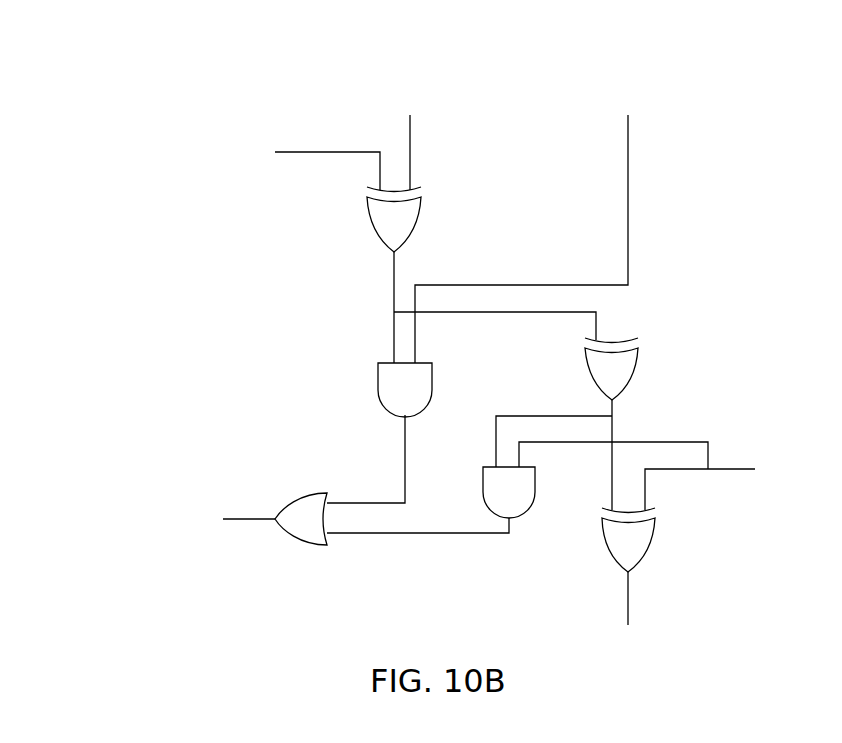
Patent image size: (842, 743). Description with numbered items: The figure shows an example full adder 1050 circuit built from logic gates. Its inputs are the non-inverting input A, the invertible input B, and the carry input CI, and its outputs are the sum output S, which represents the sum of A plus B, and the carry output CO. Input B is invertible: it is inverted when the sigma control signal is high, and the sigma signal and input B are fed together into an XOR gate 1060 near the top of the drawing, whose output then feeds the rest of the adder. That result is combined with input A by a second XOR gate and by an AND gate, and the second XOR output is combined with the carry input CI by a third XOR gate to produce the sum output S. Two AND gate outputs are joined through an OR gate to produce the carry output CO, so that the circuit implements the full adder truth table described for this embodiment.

The full adder 1050 is at (130, 68).
The XOR gate 1060 is at (425, 215).
The input A is at (524, 228).
The input B is at (409, 141).
The sum output S is at (627, 611).
The carry output CO is at (230, 522).
The carry input CI is at (651, 476).